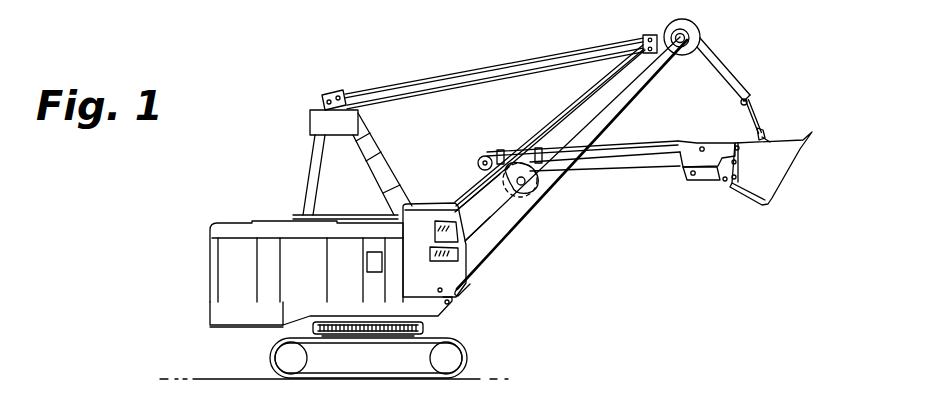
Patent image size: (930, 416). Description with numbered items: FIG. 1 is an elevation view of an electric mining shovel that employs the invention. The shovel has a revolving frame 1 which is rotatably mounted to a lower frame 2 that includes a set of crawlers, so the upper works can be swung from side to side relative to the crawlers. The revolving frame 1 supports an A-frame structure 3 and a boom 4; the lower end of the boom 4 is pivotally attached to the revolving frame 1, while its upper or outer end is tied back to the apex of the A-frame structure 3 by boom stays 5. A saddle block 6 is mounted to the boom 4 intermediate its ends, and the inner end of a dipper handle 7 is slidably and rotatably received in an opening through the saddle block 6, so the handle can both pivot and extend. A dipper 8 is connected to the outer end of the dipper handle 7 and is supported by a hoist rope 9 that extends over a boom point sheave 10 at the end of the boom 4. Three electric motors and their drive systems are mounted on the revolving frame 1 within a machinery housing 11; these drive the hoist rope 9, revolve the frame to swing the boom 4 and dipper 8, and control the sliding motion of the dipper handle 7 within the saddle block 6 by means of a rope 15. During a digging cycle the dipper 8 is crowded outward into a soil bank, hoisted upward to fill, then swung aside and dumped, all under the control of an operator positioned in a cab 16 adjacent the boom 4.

The revolving frame 1 is at (200, 314).
The lower frame 2 is at (468, 342).
The A-frame structure 3 is at (297, 176).
The boom 4 is at (510, 244).
The boom stays 5 is at (470, 84).
The saddle block 6 is at (509, 138).
The dipper handle 7 is at (629, 168).
The dipper 8 is at (804, 183).
The hoist rope 9 is at (540, 128).
The boom point sheave 10 is at (698, 28).
The machinery housing 11 is at (255, 216).
The rope 15 is at (478, 204).
The cab 16 is at (466, 246).